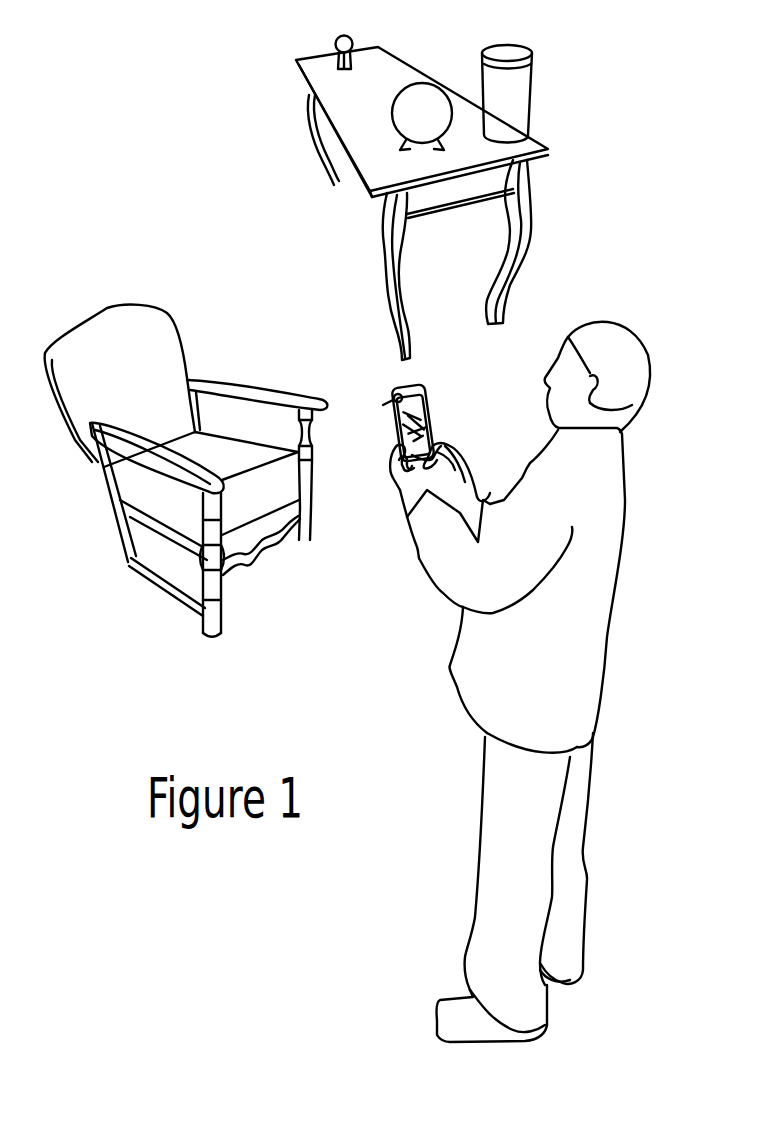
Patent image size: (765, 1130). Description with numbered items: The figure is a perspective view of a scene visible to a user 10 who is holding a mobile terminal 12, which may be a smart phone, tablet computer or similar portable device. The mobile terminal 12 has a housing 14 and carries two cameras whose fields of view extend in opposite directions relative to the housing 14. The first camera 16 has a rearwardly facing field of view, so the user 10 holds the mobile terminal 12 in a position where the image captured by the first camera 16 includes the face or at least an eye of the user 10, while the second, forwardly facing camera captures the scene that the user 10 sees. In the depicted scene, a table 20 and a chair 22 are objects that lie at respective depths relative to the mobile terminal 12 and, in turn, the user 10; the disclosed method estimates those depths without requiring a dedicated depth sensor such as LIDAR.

The user 10 is at (600, 568).
The mobile terminal 12 is at (422, 398).
The housing 14 is at (391, 410).
The first camera 16 is at (398, 395).
The table 20 is at (390, 73).
The chair 22 is at (163, 367).